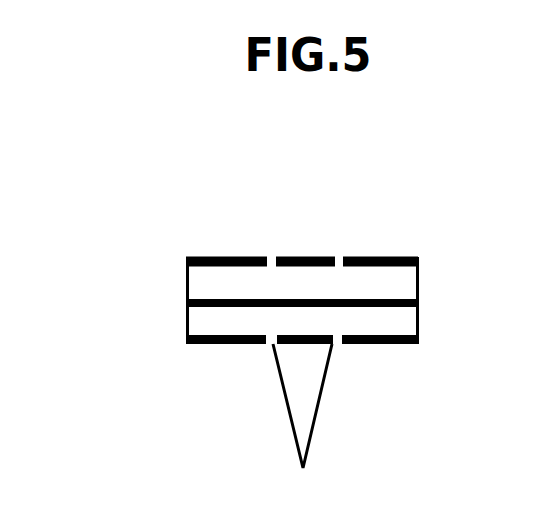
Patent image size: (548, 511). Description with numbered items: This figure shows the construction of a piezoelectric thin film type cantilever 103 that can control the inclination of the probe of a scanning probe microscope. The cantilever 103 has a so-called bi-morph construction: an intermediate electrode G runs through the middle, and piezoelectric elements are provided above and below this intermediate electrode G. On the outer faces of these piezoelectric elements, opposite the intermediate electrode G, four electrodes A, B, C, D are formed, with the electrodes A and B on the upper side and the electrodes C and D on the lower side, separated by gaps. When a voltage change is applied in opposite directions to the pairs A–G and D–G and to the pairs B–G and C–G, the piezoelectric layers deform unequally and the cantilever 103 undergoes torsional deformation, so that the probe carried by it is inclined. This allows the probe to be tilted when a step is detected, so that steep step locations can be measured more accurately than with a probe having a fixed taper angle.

The laminated piezoelectric element 103 is at (274, 324).
The electrode A is at (203, 257).
The electrode B is at (363, 257).
The electrode C is at (238, 345).
The electrode D is at (387, 345).
The intermediate electrode G is at (418, 303).